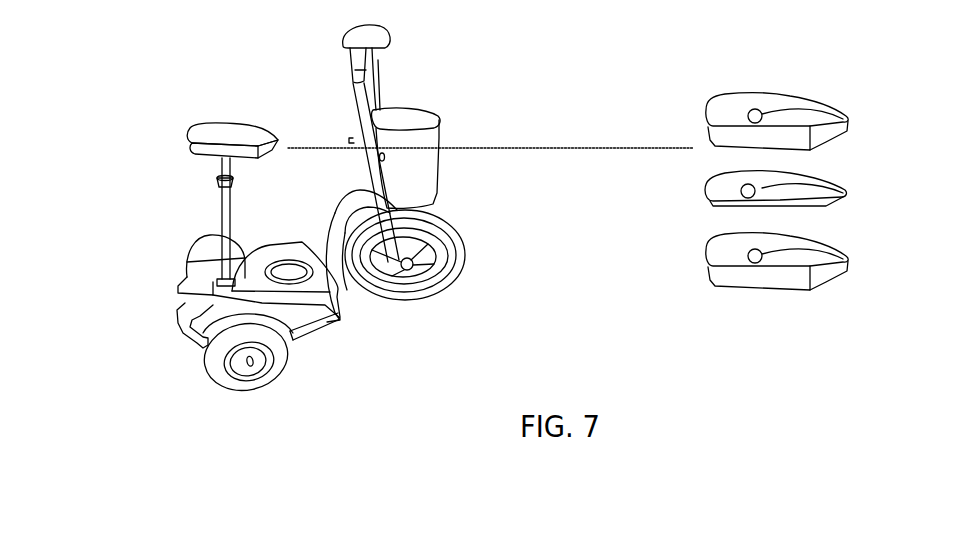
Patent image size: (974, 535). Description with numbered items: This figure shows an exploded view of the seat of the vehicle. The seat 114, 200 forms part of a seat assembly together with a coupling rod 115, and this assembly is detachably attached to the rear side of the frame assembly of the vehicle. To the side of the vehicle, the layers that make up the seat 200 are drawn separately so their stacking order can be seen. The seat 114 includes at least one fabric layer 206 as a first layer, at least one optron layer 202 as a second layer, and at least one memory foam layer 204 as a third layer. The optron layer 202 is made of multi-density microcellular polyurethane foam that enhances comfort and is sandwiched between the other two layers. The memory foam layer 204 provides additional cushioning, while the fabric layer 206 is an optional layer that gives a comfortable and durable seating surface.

The seat 200 is at (190, 109).
The seat 114 is at (225, 123).
The coupling rod 115 is at (222, 206).
The fabric layer 206 is at (849, 122).
The optron layer 202 is at (846, 197).
The memory foam layer 204 is at (849, 262).